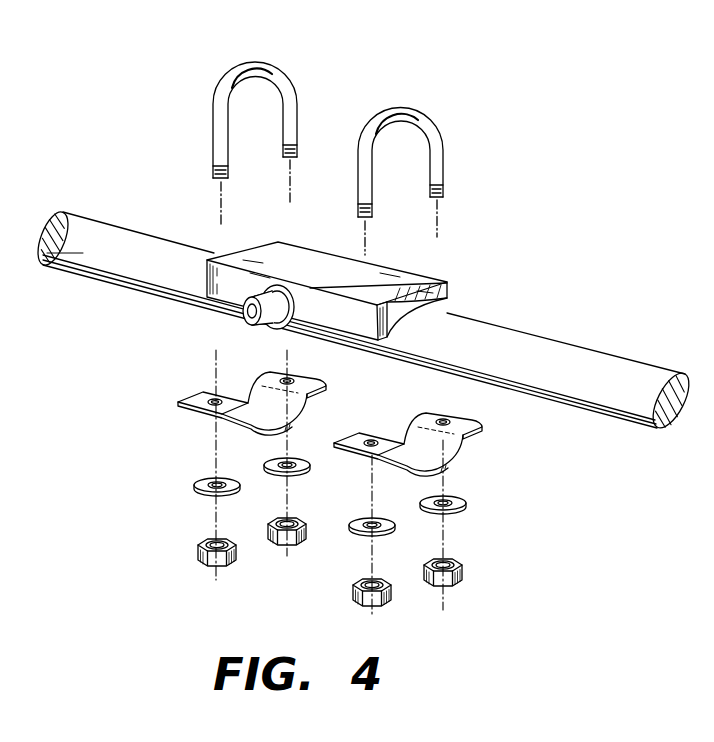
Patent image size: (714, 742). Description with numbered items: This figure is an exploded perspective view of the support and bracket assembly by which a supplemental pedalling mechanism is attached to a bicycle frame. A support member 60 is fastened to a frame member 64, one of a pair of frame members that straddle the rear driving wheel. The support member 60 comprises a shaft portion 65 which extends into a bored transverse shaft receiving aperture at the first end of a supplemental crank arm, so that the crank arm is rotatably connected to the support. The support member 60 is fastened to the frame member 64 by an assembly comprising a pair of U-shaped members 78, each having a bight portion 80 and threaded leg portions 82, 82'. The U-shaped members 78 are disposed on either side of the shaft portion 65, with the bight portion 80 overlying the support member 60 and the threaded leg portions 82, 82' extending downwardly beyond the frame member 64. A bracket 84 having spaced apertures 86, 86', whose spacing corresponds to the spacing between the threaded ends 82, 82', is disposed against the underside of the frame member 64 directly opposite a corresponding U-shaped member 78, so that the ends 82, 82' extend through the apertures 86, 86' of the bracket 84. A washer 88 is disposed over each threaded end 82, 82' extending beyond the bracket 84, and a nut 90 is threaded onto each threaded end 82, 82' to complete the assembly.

The support member 60 is at (409, 284).
The frame member 64 is at (581, 343).
The shaft portion 65 is at (248, 318).
The U-shaped member 78 is at (213, 108).
The bight portion 80 is at (257, 70).
The threaded leg portion 82 is at (265, 193).
The threaded leg portion 82' is at (394, 171).
The bracket 84 is at (215, 398).
The aperture 86 is at (324, 419).
The aperture 86' is at (384, 388).
The washer 88 is at (196, 486).
The nut 90 is at (205, 542).